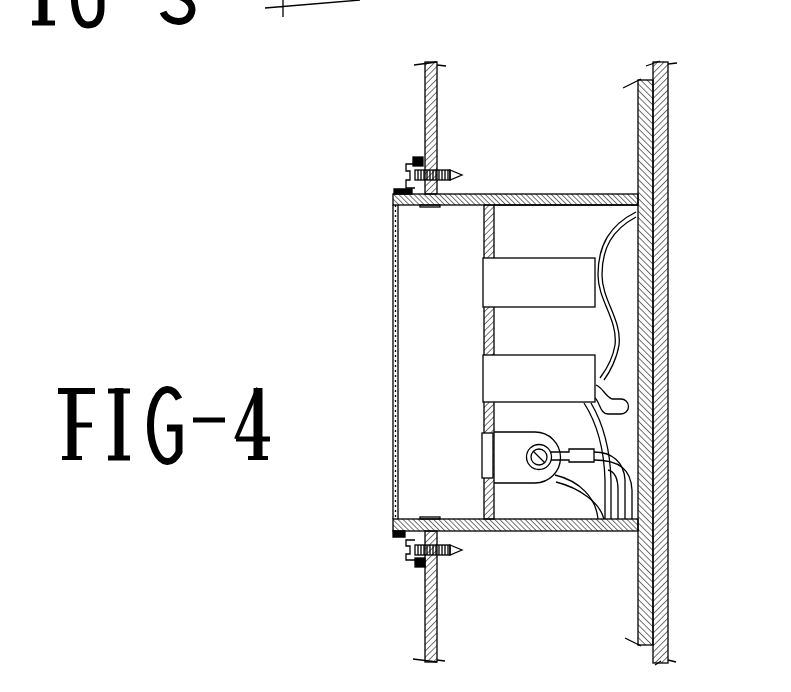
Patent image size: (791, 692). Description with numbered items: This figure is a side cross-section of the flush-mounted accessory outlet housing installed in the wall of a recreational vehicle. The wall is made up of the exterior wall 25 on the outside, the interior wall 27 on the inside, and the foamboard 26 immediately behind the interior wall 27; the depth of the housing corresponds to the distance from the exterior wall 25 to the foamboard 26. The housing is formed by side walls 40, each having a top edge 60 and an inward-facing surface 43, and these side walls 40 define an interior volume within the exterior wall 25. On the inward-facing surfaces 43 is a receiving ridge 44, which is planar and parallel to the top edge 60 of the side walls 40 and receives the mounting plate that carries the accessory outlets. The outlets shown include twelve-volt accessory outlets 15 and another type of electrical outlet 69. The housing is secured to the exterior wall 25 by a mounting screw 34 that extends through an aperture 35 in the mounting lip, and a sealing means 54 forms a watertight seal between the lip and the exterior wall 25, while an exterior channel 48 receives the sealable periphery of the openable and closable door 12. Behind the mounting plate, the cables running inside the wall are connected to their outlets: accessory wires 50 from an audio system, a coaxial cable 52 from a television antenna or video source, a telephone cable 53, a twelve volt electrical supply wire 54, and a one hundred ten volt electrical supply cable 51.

The openable and closable door 12 is at (393, 356).
The twelve-volt accessory outlet 15 is at (556, 300).
The exterior wall 25 is at (702, 60).
The foamboard 26 is at (640, 152).
The interior wall 27 is at (669, 125).
The mounting screw 34 is at (407, 166).
The aperture 35 is at (428, 160).
The side wall 40 is at (548, 194).
The inward-facing surface 43 is at (522, 206).
The receiving ridge 44 is at (487, 194).
The exterior channel 48 is at (395, 190).
The accessory wires 50 is at (605, 531).
The 110 volt electrical supply cable 51 is at (627, 507).
The coaxial cable 52 is at (618, 407).
The telephone cable 53 is at (600, 449).
The twelve volt electrical supply wire 54 is at (423, 156).
The top edge 60 is at (436, 206).
The electrical outlet 69 is at (482, 452).